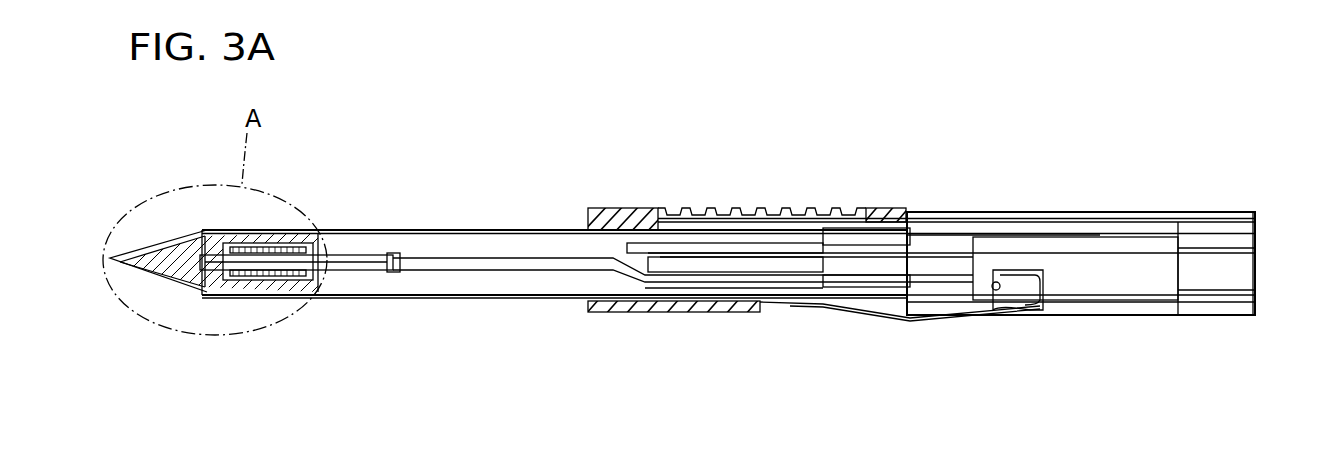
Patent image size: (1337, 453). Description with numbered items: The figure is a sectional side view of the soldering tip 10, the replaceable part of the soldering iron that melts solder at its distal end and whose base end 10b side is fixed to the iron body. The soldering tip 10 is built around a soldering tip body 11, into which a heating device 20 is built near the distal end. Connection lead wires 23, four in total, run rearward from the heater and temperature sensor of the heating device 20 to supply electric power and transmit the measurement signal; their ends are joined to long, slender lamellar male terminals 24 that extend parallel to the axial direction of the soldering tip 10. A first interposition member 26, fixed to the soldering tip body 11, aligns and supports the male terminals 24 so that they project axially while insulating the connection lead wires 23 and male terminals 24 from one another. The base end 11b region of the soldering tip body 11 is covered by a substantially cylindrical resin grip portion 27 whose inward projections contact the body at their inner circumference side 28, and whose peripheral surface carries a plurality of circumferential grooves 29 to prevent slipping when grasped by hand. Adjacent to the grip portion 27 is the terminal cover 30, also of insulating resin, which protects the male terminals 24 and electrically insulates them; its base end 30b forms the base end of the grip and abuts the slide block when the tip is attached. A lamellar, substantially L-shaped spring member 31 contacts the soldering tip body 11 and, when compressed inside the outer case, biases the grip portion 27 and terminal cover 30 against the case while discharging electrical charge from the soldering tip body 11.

The soldering tip 10 is at (701, 198).
The base end of the soldering tip 10b is at (1256, 310).
The soldering tip body 11 is at (478, 290).
The base end of the soldering tip body 11b is at (750, 312).
The heating device 20 is at (278, 290).
The connection lead wires 23 is at (578, 268).
The male terminals 24 is at (1222, 295).
The first interposition member 26 is at (1113, 287).
The grip portion 27 is at (808, 208).
The inner circumference side of the projections 28 is at (615, 208).
The grooves 29 is at (857, 208).
The terminal cover 30 is at (1088, 212).
The base end of the terminal cover 30b is at (1258, 214).
The spring member 31 is at (910, 320).